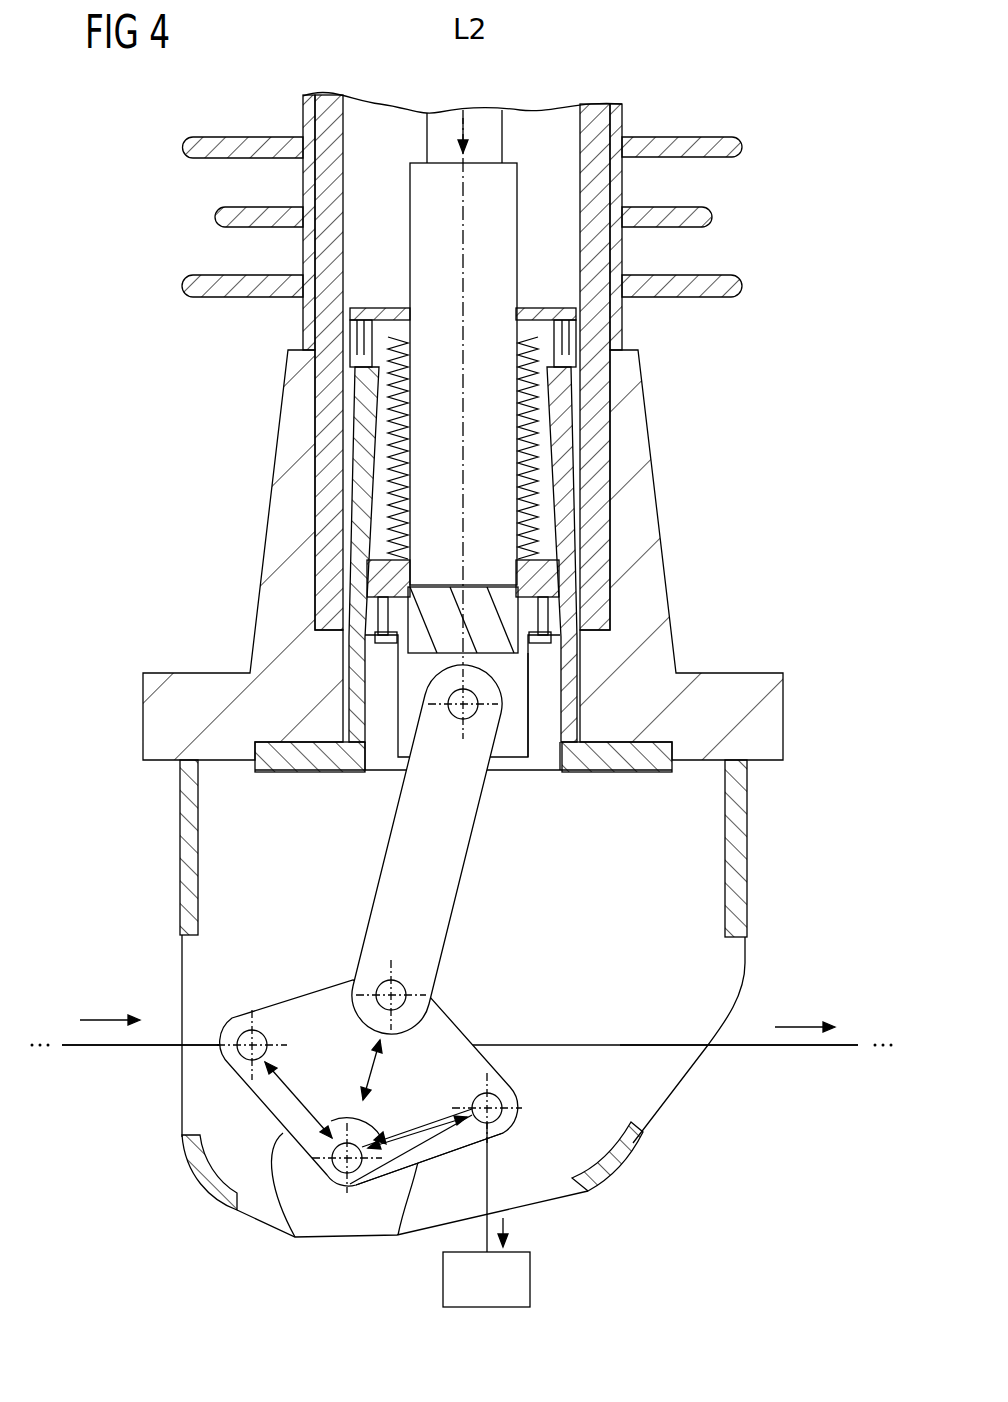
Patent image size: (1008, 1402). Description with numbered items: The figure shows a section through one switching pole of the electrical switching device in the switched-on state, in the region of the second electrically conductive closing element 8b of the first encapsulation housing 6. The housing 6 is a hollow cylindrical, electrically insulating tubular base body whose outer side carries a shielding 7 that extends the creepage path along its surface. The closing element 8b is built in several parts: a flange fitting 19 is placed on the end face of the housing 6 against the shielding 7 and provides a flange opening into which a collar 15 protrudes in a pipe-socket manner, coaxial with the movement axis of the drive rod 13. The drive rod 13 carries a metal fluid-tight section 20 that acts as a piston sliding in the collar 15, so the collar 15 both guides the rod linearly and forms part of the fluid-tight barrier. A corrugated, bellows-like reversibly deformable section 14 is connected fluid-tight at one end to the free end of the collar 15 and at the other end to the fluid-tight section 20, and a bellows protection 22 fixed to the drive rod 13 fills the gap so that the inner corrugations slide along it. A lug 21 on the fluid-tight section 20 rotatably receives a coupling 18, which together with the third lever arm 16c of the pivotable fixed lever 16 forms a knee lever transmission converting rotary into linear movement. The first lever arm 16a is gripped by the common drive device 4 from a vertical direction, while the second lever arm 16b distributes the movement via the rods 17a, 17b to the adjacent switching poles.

The common drive device 4 is at (530, 1280).
The first encapsulation housing 6 is at (462, 338).
The shielding 7 is at (682, 288).
The second electrically conductive closing element 8b is at (783, 717).
The drive rod 13 is at (427, 124).
The reversibly deformable section 14 is at (545, 437).
The collar 15 is at (393, 770).
The fixed lever 16 is at (320, 1120).
The first lever arm 16a is at (397, 1235).
The second lever arm 16b is at (290, 1138).
The third lever arm 16c is at (335, 1073).
The rod 17a is at (92, 1048).
The rod 17b is at (801, 1048).
The coupling 18 is at (402, 887).
The flange fitting 19 is at (641, 508).
The fluid-tight section 20 is at (403, 655).
The lug 21 is at (526, 672).
The bellows protection 22 is at (418, 213).